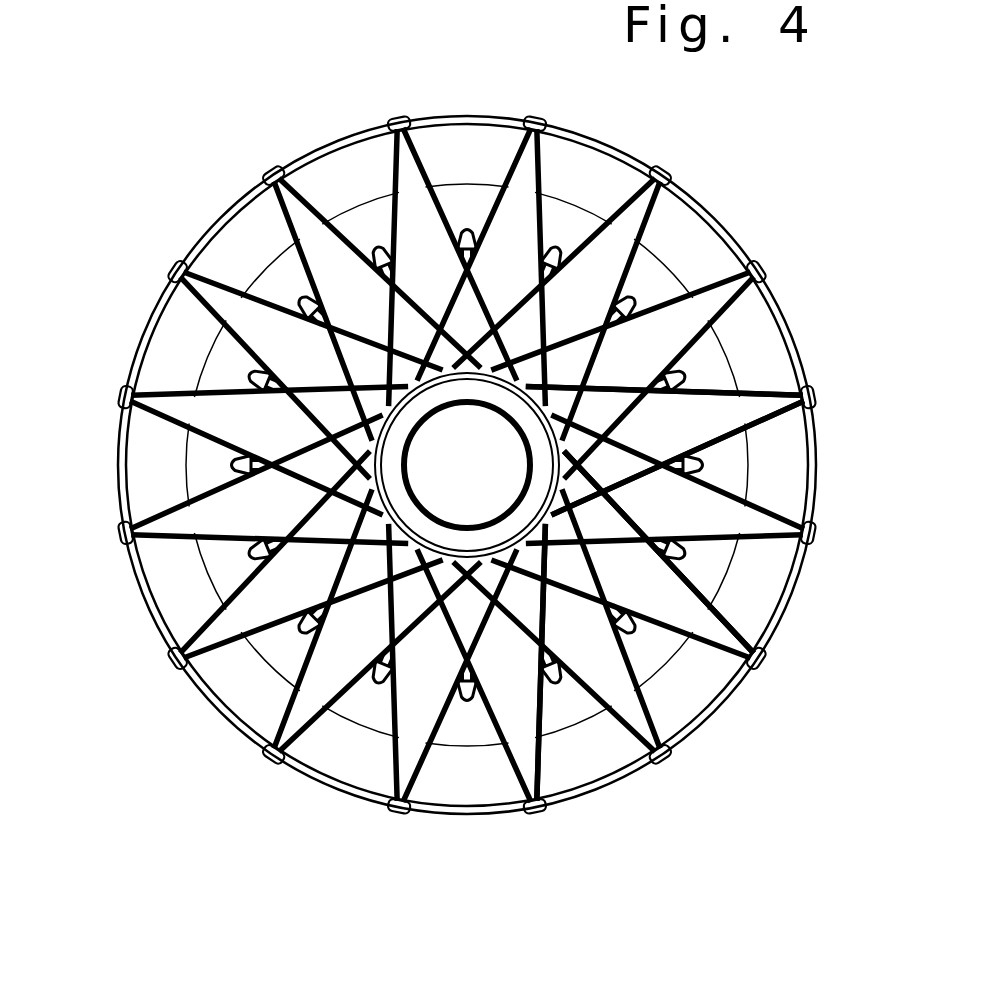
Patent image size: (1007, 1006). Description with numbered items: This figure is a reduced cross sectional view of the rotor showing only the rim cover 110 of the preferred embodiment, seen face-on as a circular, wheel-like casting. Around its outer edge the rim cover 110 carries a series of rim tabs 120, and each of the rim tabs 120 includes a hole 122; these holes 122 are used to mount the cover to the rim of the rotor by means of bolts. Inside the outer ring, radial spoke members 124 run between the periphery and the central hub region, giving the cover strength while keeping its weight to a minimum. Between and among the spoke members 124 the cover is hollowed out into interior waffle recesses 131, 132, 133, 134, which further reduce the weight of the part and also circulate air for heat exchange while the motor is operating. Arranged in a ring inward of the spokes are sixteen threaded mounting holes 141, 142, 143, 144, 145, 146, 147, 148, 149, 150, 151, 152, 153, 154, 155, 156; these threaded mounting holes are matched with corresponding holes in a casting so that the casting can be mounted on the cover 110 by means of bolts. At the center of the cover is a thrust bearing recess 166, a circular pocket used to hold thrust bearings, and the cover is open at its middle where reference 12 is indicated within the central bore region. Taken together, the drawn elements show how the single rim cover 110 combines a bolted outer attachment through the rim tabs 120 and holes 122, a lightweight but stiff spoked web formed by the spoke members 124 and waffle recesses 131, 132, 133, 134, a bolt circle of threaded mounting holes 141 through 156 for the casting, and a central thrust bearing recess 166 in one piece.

The shaft bore 12 is at (466, 466).
The rim cover 110 is at (806, 359).
The rim tabs 120 is at (816, 402).
The holes 122 is at (820, 397).
The radial spoke members 124 is at (712, 576).
The interior waffle recess 131 is at (756, 412).
The interior waffle recess 132 is at (710, 466).
The interior waffle recess 133 is at (692, 556).
The interior waffle recess 134 is at (732, 592).
The threaded mounting hole 141 is at (466, 226).
The threaded mounting hole 142 is at (560, 242).
The threaded mounting hole 143 is at (640, 294).
The threaded mounting hole 144 is at (690, 372).
The threaded mounting hole 145 is at (616, 472).
The threaded mounting hole 146 is at (642, 636).
The threaded mounting hole 147 is at (562, 688).
The threaded mounting hole 148 is at (548, 776).
The threaded mounting hole 149 is at (466, 706).
The threaded mounting hole 150 is at (376, 688).
The threaded mounting hole 151 is at (298, 636).
The threaded mounting hole 152 is at (247, 558).
The threaded mounting hole 153 is at (226, 465).
The threaded mounting hole 154 is at (246, 372).
The threaded mounting hole 155 is at (298, 294).
The threaded mounting hole 156 is at (374, 242).
The thrust bearing recess 166 is at (396, 468).